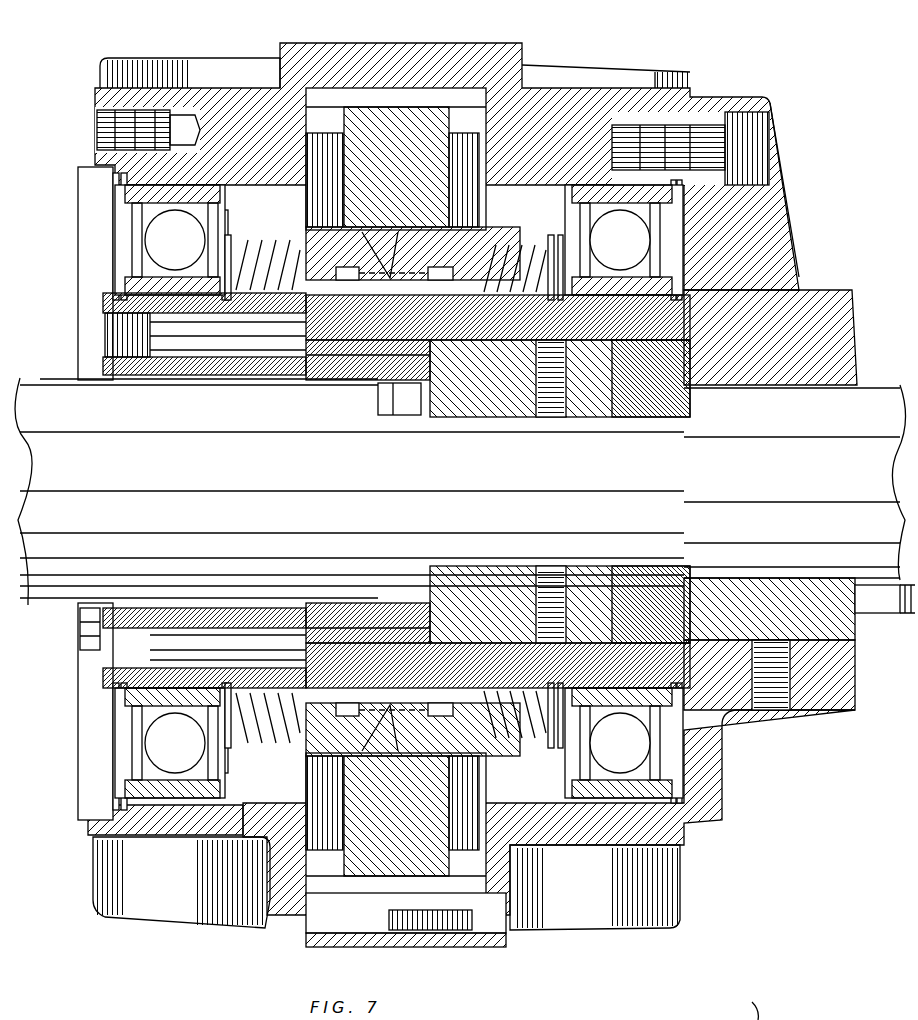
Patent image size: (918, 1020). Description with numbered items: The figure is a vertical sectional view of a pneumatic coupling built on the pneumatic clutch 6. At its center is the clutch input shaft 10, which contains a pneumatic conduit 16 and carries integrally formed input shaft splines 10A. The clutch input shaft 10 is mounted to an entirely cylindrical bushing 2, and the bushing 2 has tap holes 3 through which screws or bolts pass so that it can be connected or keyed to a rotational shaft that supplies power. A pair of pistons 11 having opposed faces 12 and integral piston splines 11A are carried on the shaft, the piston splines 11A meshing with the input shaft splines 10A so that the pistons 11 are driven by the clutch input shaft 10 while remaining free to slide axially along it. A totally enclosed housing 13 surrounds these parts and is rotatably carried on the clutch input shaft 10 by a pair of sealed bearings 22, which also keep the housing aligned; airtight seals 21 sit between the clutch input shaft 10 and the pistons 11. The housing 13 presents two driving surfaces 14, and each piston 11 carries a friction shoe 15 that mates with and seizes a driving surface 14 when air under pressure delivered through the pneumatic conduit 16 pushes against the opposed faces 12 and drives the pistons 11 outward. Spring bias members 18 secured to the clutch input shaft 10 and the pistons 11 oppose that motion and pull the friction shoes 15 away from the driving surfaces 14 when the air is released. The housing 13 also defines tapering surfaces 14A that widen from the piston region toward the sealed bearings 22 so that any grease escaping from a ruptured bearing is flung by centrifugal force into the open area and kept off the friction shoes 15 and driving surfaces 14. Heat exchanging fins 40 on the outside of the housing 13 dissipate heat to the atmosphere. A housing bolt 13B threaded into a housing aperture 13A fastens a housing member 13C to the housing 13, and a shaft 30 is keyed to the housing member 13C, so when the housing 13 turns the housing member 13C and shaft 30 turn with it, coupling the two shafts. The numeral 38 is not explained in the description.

The bushing 2 is at (615, 605).
The tap holes 3 is at (548, 420).
The pneumatic clutch 6 is at (795, 190).
The clutch input shaft 10 is at (242, 376).
The input shaft splines 10A is at (348, 268).
The pistons 11 is at (388, 270).
The piston splines 11A is at (385, 278).
The opposed faces 12 is at (372, 228).
The totally enclosed housing 13 is at (628, 68).
The housing aperture 13A is at (97, 120).
The housing bolt 13B is at (740, 138).
The housing member 13C is at (857, 290).
The driving surfaces 14 is at (497, 265).
The tapering surfaces 14A is at (235, 275).
The friction shoes 15 is at (470, 160).
The pneumatic conduit 16 is at (152, 340).
The spring bias members 18 is at (258, 233).
The airtight seals 21 is at (175, 212).
The sealed bearings 22 is at (178, 236).
The shaft 30 is at (773, 478).
The pin 38 is at (90, 622).
The heat exchanging fins 40 is at (747, 1001).